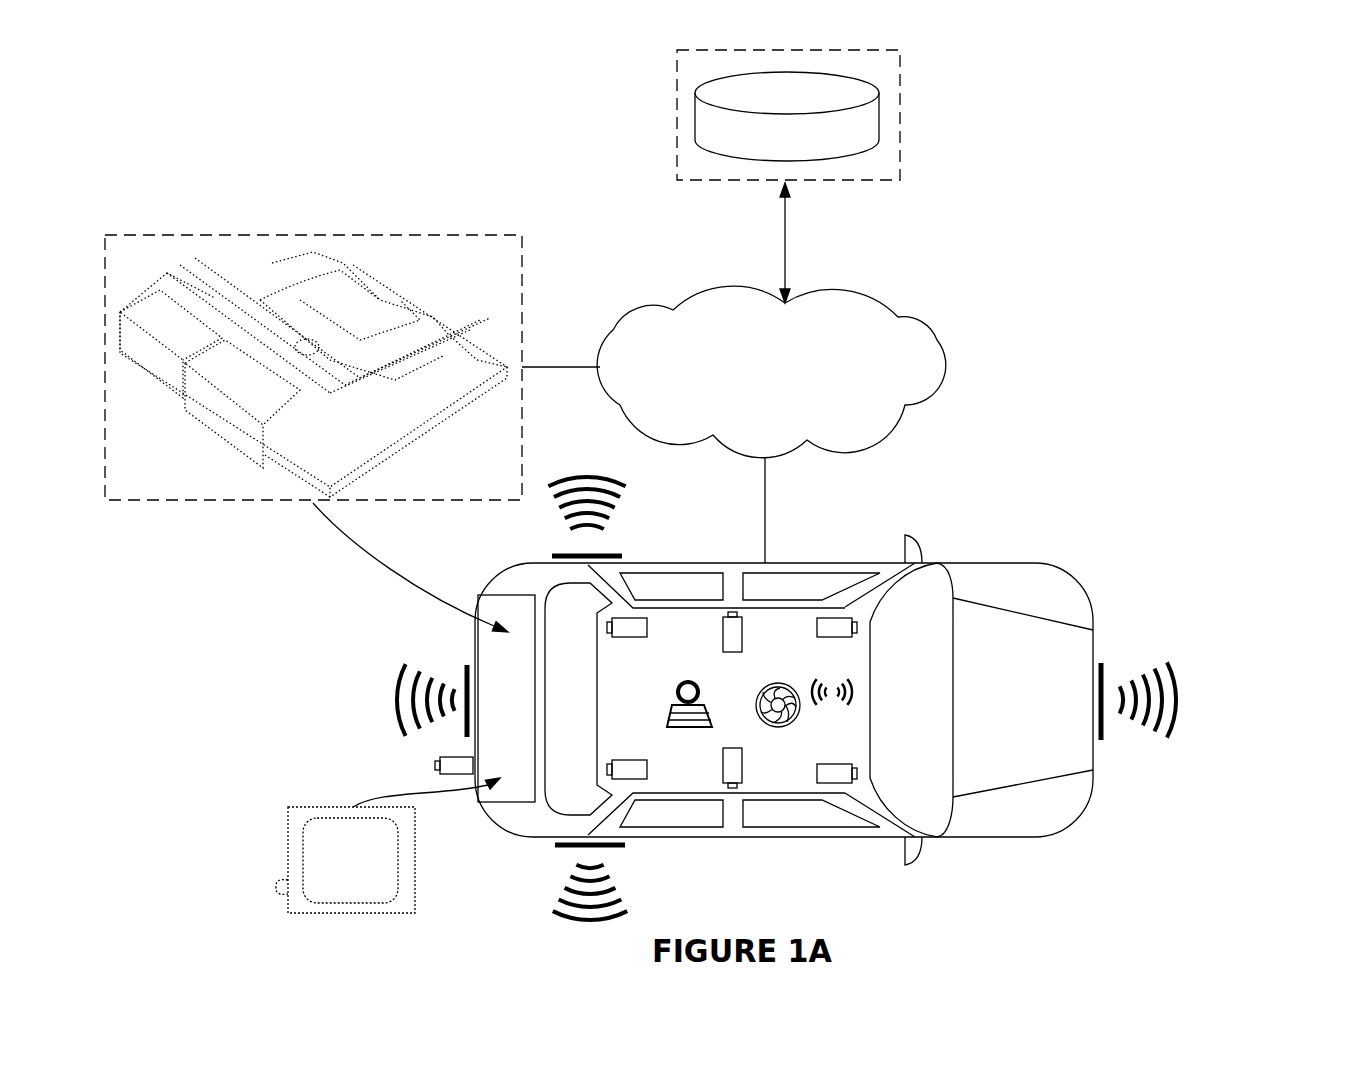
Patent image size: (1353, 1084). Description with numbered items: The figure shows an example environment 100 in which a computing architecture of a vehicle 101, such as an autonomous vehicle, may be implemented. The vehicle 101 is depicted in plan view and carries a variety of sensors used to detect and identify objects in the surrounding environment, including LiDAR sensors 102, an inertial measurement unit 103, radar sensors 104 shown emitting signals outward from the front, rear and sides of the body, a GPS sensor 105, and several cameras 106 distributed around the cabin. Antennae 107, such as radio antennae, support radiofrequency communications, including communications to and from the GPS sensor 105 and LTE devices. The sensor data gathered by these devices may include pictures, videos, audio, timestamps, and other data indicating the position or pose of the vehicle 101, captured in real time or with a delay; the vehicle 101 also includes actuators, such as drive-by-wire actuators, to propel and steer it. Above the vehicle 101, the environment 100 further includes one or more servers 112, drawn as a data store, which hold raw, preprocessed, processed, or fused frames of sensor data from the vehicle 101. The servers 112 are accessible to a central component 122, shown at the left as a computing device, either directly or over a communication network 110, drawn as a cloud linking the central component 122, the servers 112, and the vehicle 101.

The environment 100 is at (173, 98).
The vehicle 101 is at (1007, 648).
The LiDAR sensors 102 is at (780, 727).
The inertial measurement unit 103 is at (367, 865).
The radar sensors 104 is at (395, 702).
The GPS sensor 105 is at (745, 705).
The cameras 106 is at (733, 612).
The antennae 107 is at (823, 664).
The communication network 110 is at (771, 424).
The servers 112 is at (788, 115).
The central component 122 is at (237, 278).